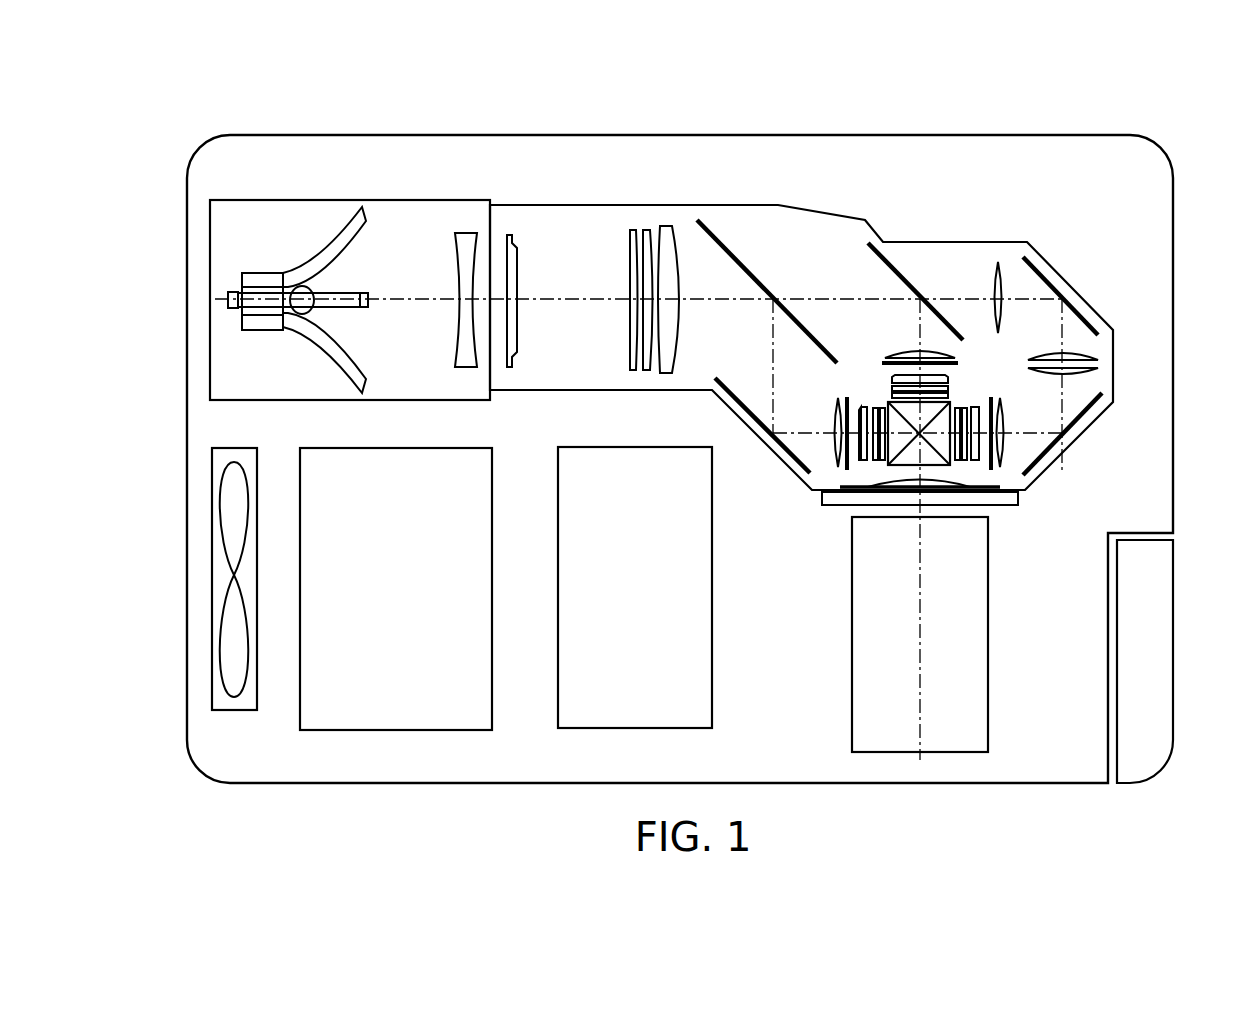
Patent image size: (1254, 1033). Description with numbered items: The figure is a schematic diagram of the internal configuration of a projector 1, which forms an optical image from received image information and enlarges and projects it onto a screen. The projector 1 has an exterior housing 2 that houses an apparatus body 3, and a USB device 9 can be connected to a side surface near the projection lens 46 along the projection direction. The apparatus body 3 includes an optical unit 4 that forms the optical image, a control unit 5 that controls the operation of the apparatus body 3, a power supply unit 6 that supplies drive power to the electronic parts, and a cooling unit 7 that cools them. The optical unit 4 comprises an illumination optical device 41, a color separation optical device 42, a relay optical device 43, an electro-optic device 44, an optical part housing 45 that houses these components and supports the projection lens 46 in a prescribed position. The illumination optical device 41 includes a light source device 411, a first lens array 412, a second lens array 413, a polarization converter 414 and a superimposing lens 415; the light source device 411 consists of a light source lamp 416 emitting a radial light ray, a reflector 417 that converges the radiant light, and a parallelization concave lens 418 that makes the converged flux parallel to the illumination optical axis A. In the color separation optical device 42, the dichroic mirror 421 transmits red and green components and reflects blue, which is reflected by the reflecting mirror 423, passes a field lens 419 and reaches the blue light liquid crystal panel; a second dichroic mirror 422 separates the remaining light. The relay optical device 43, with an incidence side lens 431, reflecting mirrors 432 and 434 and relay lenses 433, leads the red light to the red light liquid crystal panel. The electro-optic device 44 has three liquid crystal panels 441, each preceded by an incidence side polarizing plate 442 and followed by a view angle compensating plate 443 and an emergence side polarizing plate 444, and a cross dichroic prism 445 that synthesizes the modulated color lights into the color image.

The projector 1 is at (975, 107).
The exterior housing 2 is at (1175, 242).
The apparatus body 3 is at (1101, 161).
The optical unit 4 is at (780, 163).
The control unit 5 is at (712, 688).
The power supply unit 6 is at (492, 690).
The cooling unit 7 is at (232, 710).
The USB device 9 is at (1155, 650).
The illumination optical device 41 is at (638, 176).
The color separation optical device 42 is at (823, 240).
The relay optical device 43 is at (1068, 266).
The electro-optic device 44 is at (1004, 365).
The optical part housing 45 is at (930, 242).
The projection lens 46 is at (988, 643).
The light source device 411 is at (440, 92).
The first lens array 412 is at (520, 268).
The second lens array 413 is at (632, 232).
The polarization converter 414 is at (653, 232).
The superimposing lens 415 is at (676, 254).
The light source lamp 416 is at (372, 288).
The reflector 417 is at (348, 208).
The parallelization concave lens 418 is at (465, 232).
The field lens 419 is at (906, 347).
The dichroic mirror 421 is at (730, 249).
The dichroic mirror 422 is at (905, 272).
The reflecting mirror 423 is at (733, 403).
The incidence side lens 431 is at (1000, 262).
The reflecting mirror 432 is at (1091, 320).
The relay lens 433 is at (1100, 372).
The reflecting mirror 434 is at (1087, 410).
The liquid crystal panel 441 is at (1033, 555).
The incidence side polarizing plate 442 is at (880, 360).
The view angle compensating plate 443 is at (892, 379).
The emergence side polarizing plate 444 is at (948, 396).
The cross dichroic prism 445 is at (930, 460).
The illumination optical axis A is at (561, 302).